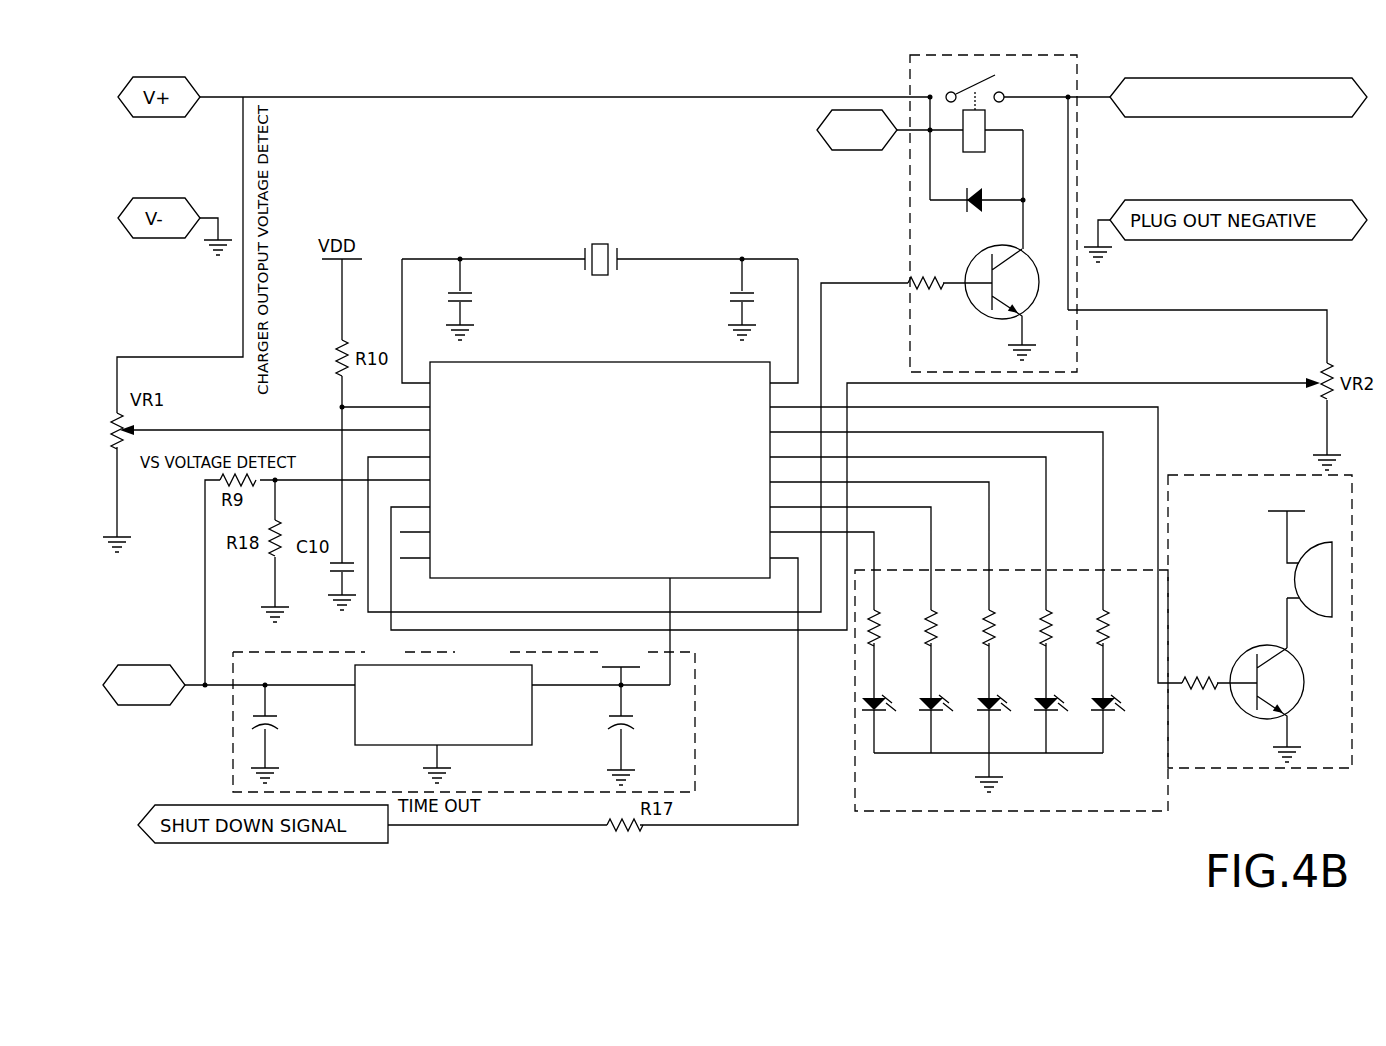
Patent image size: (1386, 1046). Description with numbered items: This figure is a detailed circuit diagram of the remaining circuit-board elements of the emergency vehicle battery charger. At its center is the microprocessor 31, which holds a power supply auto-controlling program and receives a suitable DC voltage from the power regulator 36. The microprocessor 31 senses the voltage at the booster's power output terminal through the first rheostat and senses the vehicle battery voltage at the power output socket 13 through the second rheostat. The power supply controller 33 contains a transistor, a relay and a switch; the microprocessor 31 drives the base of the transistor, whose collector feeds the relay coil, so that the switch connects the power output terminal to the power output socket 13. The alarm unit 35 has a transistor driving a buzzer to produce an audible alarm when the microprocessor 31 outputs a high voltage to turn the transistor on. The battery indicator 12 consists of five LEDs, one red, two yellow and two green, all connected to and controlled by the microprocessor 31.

The battery indicator 12 is at (855, 730).
The power output socket 13 is at (1238, 114).
The microprocessor 31 is at (599, 362).
The power supply controller 33 is at (910, 196).
The alarm unit 35 is at (1247, 473).
The power regulator 36 is at (233, 707).